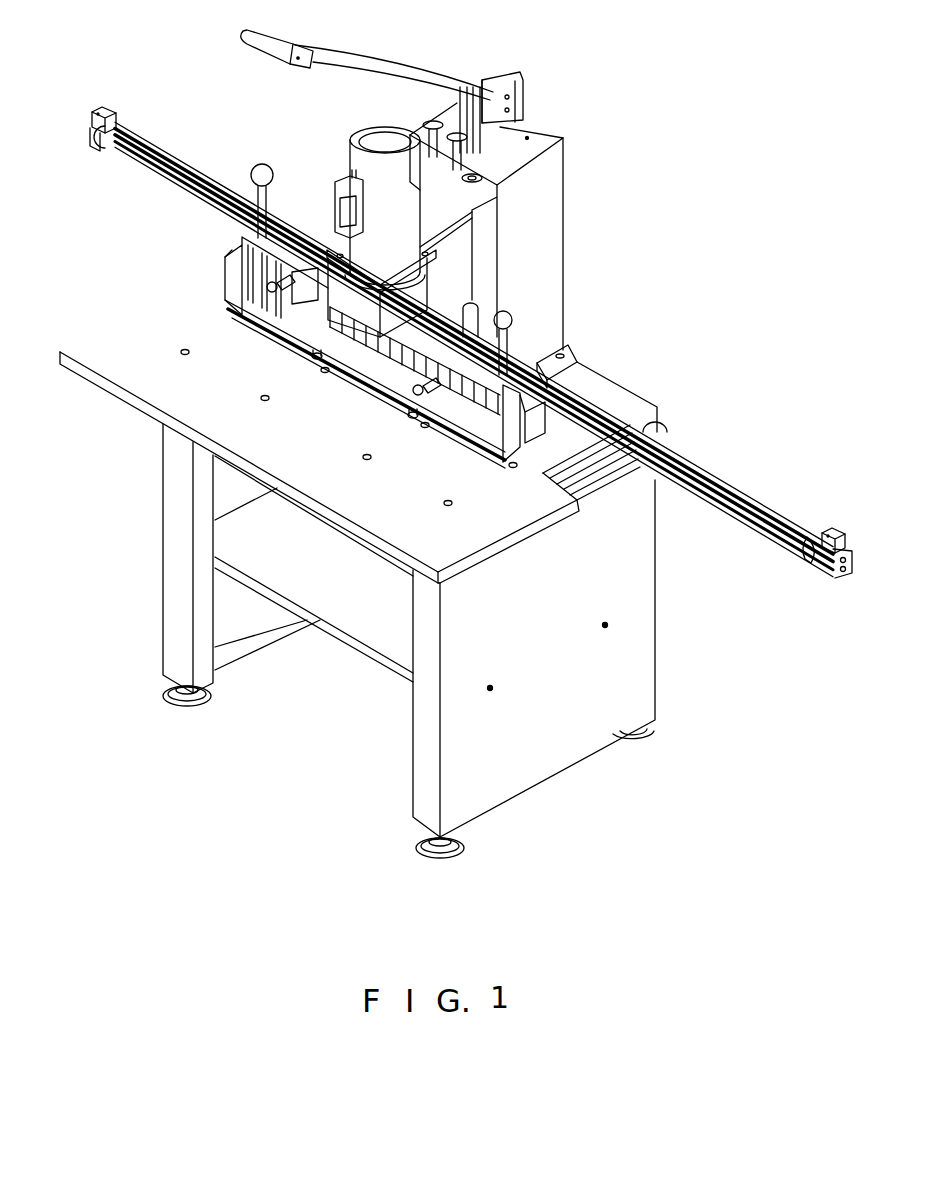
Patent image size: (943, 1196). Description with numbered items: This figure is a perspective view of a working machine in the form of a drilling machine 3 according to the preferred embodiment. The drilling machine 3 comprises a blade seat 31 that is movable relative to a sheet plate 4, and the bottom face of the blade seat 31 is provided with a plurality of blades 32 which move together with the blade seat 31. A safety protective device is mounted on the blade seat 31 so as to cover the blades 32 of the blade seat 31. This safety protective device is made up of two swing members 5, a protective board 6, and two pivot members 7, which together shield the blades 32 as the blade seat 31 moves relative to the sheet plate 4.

The drilling machine 3 is at (441, 246).
The sheet plate 4 is at (68, 330).
The swing members 5 is at (266, 258).
The protective board 6 is at (217, 330).
The pivot members 7 is at (265, 285).
The blade seat 31 is at (442, 337).
The blades 32 is at (527, 387).